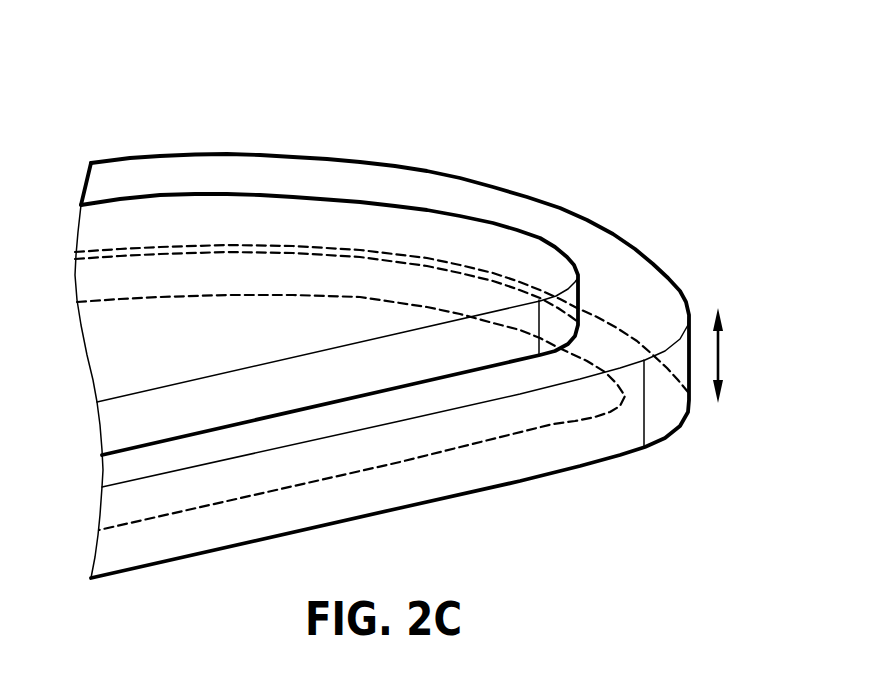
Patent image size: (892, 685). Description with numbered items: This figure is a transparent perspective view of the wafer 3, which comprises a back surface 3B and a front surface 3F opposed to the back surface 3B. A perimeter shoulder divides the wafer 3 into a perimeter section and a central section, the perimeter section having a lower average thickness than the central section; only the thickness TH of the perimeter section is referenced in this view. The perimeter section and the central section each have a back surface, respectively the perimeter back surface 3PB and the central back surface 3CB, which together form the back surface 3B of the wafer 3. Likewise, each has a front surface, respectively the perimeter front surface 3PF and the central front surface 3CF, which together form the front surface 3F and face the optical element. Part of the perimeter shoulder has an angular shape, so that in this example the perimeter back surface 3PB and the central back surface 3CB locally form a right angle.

The wafer 3 is at (130, 107).
The back surface 3B is at (678, 138).
The central back surface 3CB is at (487, 258).
The perimeter back surface 3PB is at (608, 278).
The front surface 3F is at (732, 518).
The central front surface 3CF is at (540, 405).
The perimeter front surface 3PF is at (655, 408).
The thickness of the perimeter section TH is at (738, 355).